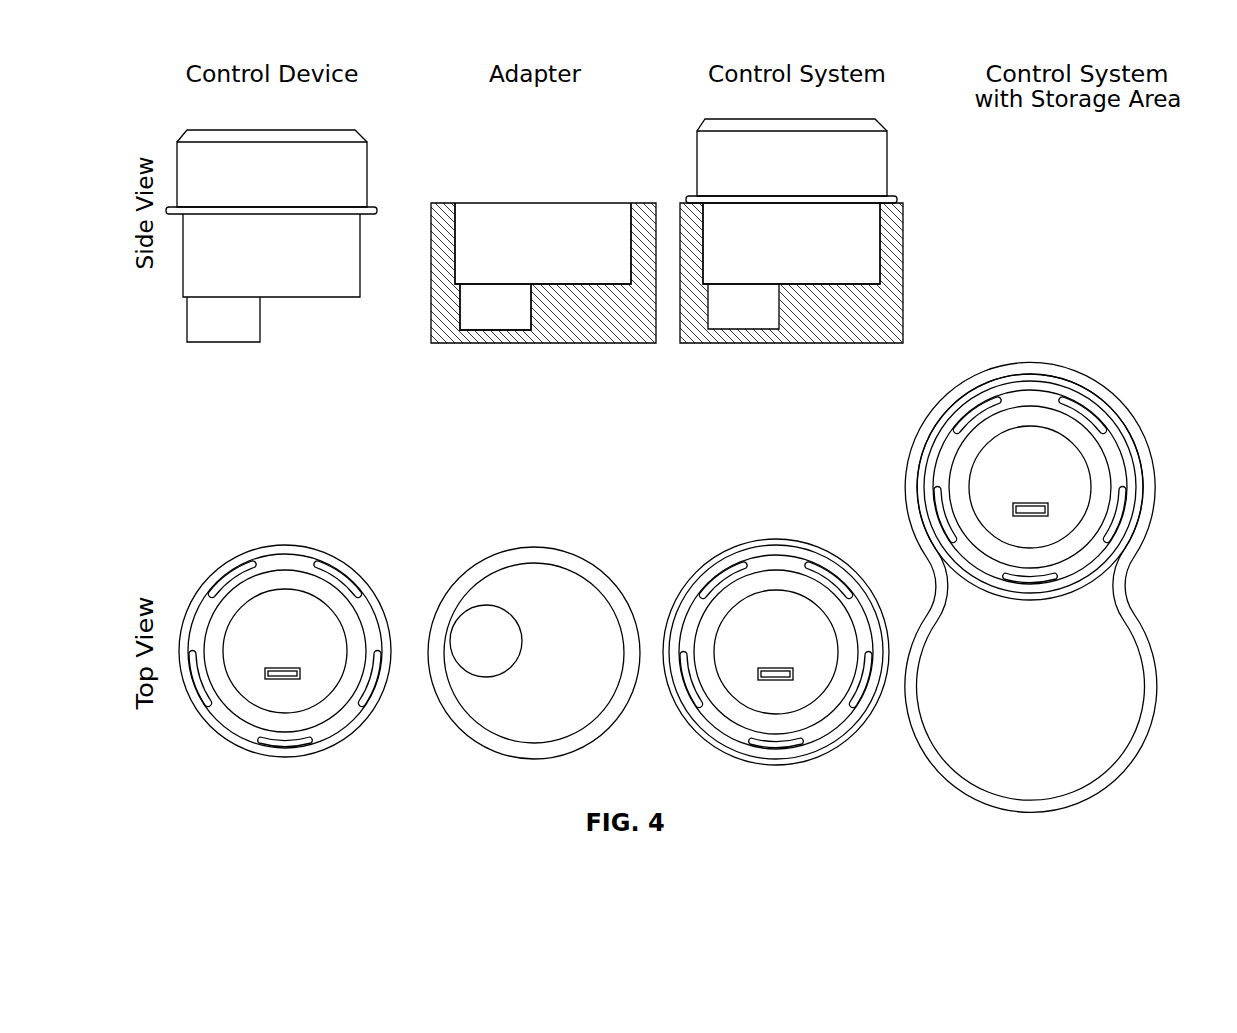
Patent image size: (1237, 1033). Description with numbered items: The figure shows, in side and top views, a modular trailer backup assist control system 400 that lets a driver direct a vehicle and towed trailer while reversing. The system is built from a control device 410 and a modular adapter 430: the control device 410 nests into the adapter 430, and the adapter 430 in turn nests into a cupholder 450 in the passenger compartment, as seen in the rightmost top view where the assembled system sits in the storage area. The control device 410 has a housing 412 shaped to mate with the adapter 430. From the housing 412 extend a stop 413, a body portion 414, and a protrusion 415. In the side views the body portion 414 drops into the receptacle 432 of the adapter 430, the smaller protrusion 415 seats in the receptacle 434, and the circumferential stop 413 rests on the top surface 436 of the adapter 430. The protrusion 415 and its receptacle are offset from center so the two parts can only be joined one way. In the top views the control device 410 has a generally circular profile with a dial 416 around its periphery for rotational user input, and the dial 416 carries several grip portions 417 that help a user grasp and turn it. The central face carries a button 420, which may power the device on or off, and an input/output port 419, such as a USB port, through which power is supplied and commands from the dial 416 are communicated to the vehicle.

The modular trailer backup assist control system 400 is at (895, 145).
The control device 410 is at (367, 158).
The housing 412 is at (297, 130).
The stop 413 is at (377, 207).
The body portion 414 is at (360, 265).
The protrusion 415 is at (475, 319).
The dial 416 is at (367, 620).
The grip portions 417 is at (232, 572).
The input/output port 419 is at (282, 667).
The button 420 is at (657, 570).
The modular adapter 430 is at (535, 203).
The receptacle 432 is at (455, 245).
The receptacle 434 is at (780, 303).
The top surface 436 is at (645, 203).
The cupholder 450 is at (1108, 388).